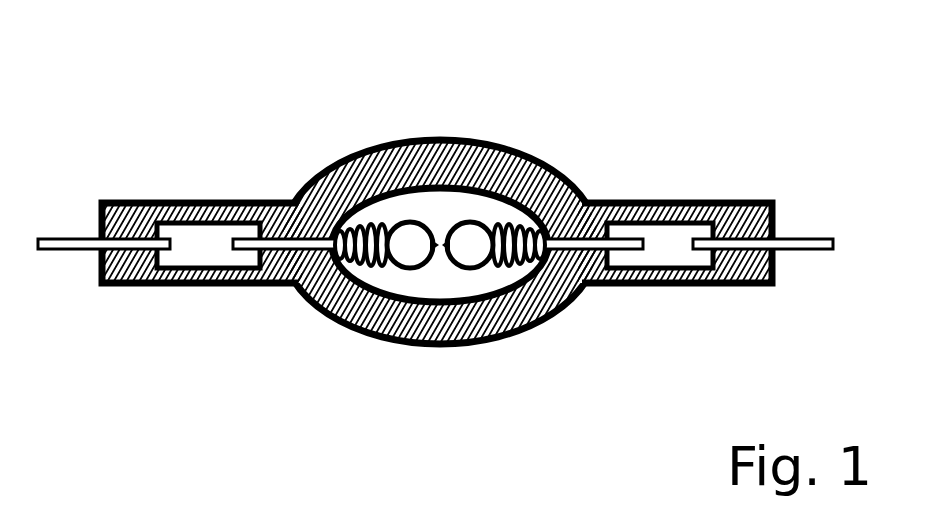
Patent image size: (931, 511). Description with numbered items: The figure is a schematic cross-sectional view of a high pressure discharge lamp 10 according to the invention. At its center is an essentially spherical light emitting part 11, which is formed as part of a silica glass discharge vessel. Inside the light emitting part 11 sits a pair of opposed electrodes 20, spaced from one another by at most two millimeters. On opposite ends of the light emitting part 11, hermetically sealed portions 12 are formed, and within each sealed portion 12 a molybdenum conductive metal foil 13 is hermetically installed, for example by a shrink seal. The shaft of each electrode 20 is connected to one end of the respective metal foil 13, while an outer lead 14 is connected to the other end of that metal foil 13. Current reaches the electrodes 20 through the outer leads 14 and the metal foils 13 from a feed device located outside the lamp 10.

The high pressure discharge lamp 10 is at (435, 236).
The light emitting part 11 is at (437, 285).
The hermetically sealed portion 12 is at (203, 295).
The conductive metal foil 13 is at (192, 232).
The outer lead 14 is at (64, 237).
The electrode 20 is at (373, 212).